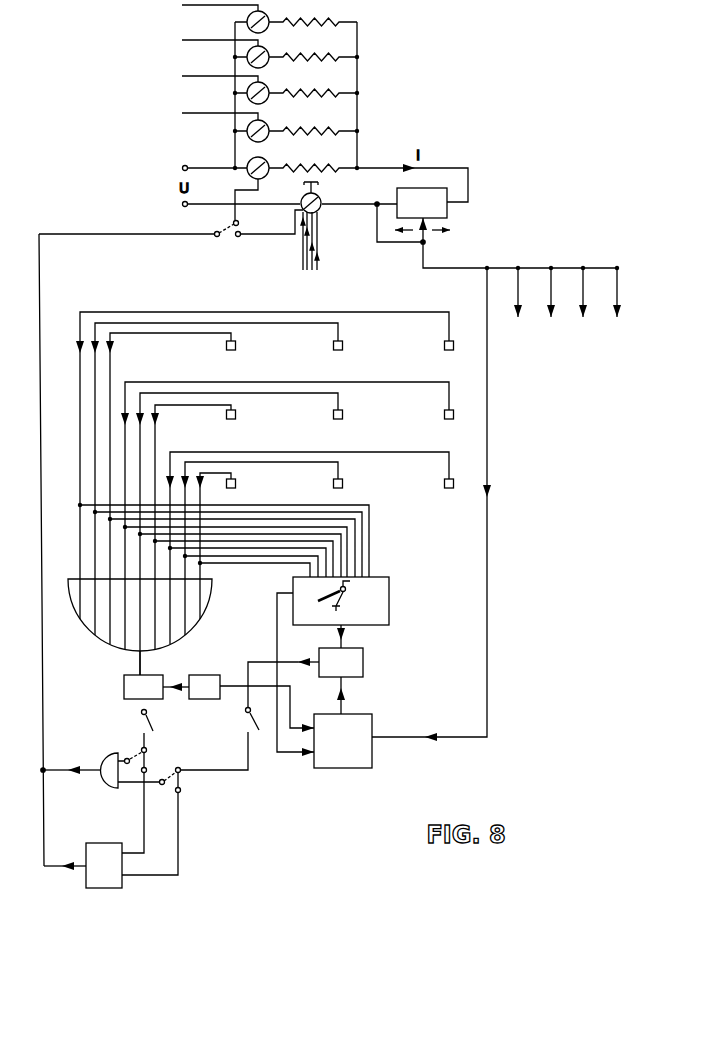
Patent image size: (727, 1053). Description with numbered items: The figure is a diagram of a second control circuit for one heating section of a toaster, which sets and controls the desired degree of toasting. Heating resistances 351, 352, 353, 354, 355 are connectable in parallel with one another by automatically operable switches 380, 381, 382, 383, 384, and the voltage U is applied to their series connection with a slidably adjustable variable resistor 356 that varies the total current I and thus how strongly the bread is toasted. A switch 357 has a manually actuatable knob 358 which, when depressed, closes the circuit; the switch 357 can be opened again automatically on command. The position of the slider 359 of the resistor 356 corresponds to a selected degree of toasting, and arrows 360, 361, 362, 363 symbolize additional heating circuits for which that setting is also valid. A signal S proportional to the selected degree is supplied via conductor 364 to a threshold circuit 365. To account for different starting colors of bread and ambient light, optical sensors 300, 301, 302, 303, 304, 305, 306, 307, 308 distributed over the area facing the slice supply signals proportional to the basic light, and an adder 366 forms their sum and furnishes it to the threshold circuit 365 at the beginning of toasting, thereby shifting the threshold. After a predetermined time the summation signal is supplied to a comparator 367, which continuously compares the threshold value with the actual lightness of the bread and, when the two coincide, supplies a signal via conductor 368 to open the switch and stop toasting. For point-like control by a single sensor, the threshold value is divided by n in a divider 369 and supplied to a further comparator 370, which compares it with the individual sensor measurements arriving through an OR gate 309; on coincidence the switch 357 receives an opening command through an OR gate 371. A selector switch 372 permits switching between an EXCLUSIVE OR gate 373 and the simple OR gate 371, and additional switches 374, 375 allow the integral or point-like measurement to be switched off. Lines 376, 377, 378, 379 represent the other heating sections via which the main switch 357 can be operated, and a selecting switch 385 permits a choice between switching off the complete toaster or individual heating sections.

The optical sensor 300 is at (236, 346).
The optical sensor 301 is at (343, 346).
The optical sensor 302 is at (444, 346).
The optical sensor 303 is at (226, 415).
The optical sensor 304 is at (333, 415).
The optical sensor 305 is at (444, 415).
The optical sensor 306 is at (236, 484).
The optical sensor 307 is at (333, 484).
The optical sensor 308 is at (444, 484).
The OR gate 309 is at (208, 594).
The heating resistance 351 is at (312, 162).
The heating resistance 352 is at (312, 125).
The heating resistance 353 is at (312, 87).
The heating resistance 354 is at (312, 51).
The heating resistance 355 is at (312, 16).
The variable resistor 356 is at (447, 211).
The switch 357 is at (300, 209).
The knob 358 is at (319, 186).
The slider 359 is at (425, 244).
The arrow 360 is at (515, 282).
The arrow 361 is at (548, 282).
The arrow 362 is at (580, 282).
The arrow 363 is at (614, 282).
The conductor 364 is at (490, 415).
The threshold circuit 365 is at (342, 769).
The adder 366 is at (389, 600).
The comparator 367 is at (363, 662).
The conductor 368 is at (45, 672).
The divider 369 is at (201, 675).
The further comparator 370 is at (124, 688).
The OR gate 371 is at (102, 780).
The selector switch 372 is at (169, 777).
The EXCLUSIVE OR gate 373 is at (105, 889).
The switch 374 is at (152, 721).
The switch 375 is at (247, 717).
The line 376 is at (203, 113).
The line 377 is at (203, 76).
The line 378 is at (203, 40).
The line 379 is at (203, 5).
The automatically operable switch 380 is at (266, 176).
The automatically operable switch 381 is at (266, 139).
The automatically operable switch 382 is at (266, 101).
The automatically operable switch 383 is at (266, 65).
The automatically operable switch 384 is at (266, 30).
The selecting switch 385 is at (227, 238).